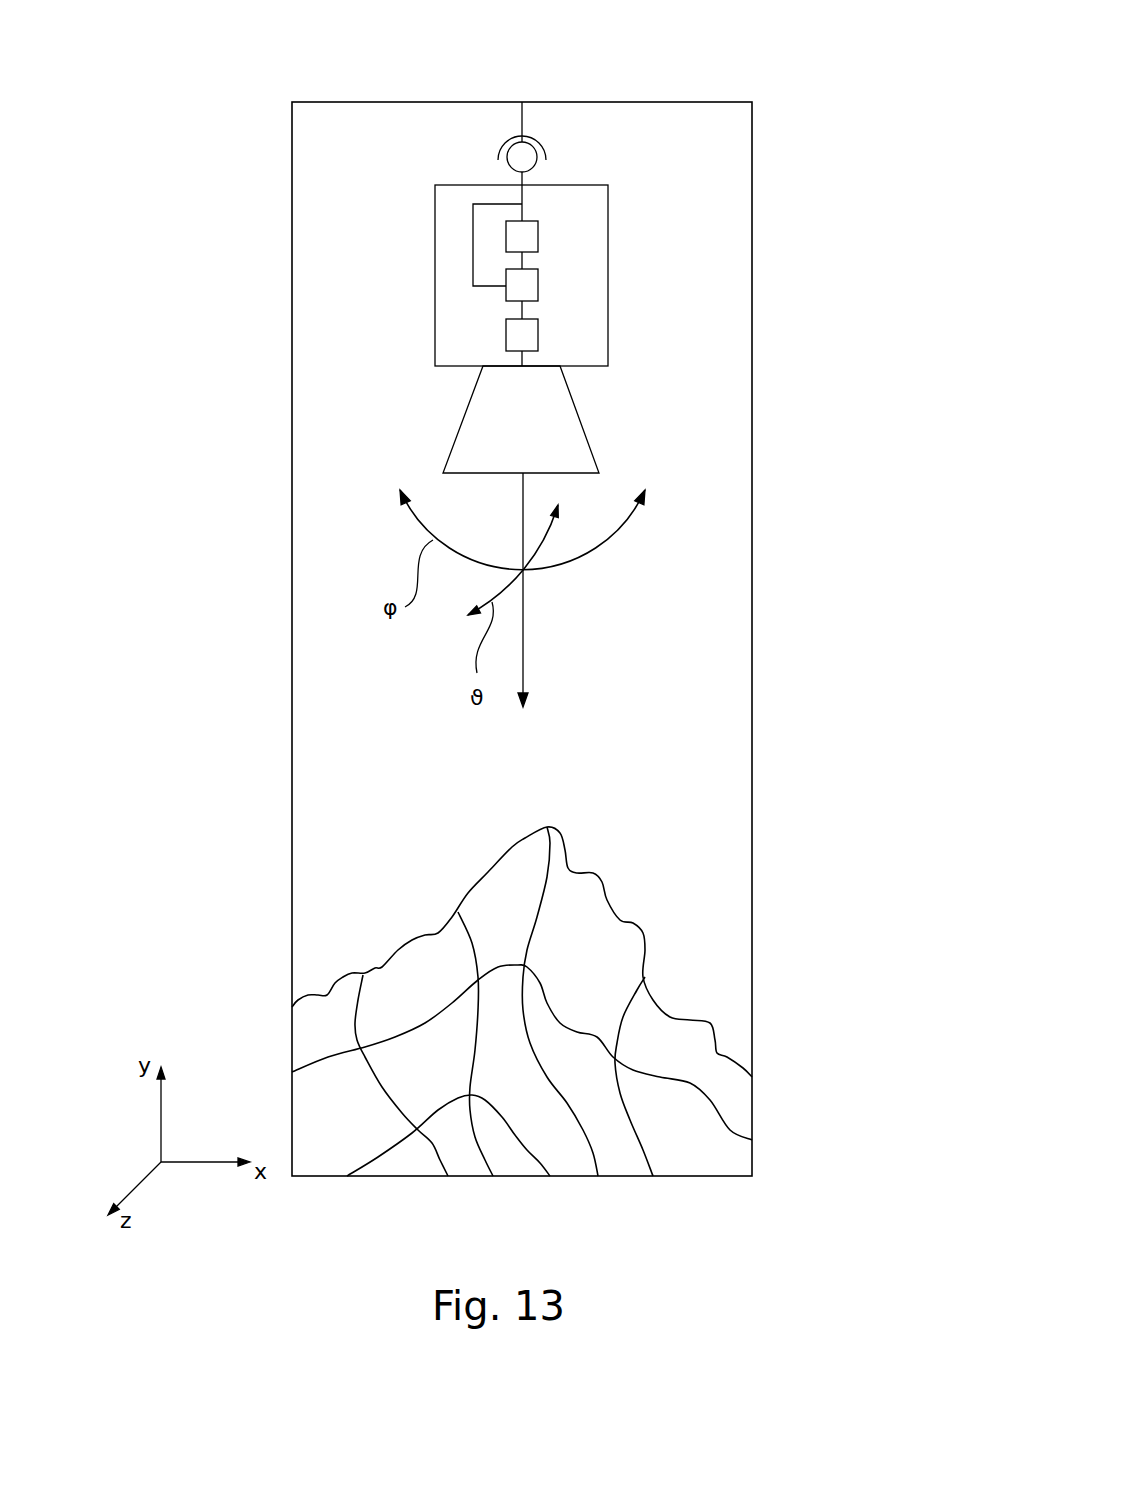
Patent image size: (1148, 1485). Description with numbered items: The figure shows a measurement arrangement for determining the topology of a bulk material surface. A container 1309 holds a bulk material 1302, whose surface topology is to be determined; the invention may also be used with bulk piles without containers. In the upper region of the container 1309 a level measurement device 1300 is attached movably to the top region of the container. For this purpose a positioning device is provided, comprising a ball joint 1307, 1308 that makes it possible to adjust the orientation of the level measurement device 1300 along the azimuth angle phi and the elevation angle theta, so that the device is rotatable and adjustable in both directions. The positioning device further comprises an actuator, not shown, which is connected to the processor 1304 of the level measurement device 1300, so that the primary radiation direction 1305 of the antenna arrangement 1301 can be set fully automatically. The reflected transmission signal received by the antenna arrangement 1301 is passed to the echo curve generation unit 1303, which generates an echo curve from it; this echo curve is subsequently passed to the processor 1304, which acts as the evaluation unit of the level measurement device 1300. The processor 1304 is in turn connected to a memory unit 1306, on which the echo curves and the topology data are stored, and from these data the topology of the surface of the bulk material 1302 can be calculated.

The level measurement device 1300 is at (608, 186).
The antenna arrangement 1301 is at (585, 427).
The surface of bulk material pile 1302 is at (737, 1098).
The echo curve generation unit 1303 is at (538, 335).
The processor 1304 is at (538, 285).
The primary radiation direction 1305 is at (523, 628).
The memory unit 1306 is at (538, 236).
The ball joint 1307 is at (518, 162).
The ball joint 1308 is at (543, 147).
The container 1309 is at (752, 700).